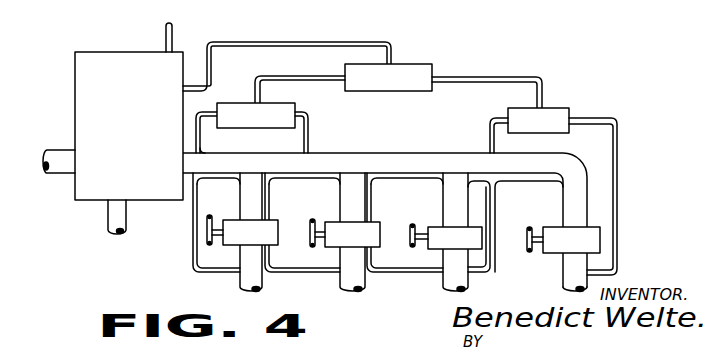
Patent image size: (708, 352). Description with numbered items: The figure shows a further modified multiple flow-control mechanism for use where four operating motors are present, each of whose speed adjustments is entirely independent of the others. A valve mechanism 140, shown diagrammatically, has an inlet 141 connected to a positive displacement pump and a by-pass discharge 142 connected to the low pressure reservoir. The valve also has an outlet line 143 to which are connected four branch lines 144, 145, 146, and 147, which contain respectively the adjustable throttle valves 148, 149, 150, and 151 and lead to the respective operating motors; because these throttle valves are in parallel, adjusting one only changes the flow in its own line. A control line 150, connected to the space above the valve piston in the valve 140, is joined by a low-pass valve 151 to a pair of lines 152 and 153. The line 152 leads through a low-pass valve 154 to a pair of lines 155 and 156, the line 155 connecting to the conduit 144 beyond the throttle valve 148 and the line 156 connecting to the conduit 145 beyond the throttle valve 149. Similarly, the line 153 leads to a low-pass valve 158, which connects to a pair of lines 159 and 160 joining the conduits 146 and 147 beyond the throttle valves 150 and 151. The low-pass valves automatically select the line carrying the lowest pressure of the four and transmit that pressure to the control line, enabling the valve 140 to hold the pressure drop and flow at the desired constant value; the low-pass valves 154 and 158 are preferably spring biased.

The valve mechanism 140 is at (82, 96).
The inlet 141 is at (64, 178).
The by-pass discharge 142 is at (110, 222).
The outlet line 143 is at (352, 162).
The branch line 144 is at (264, 283).
The branch line 145 is at (360, 278).
The branch line 146 is at (450, 260).
The branch line 147 is at (572, 272).
The adjustable throttle valve 148 is at (276, 220).
The adjustable throttle valve 149 is at (367, 227).
The control line 150 is at (248, 41).
The low-pass valve 151 is at (410, 66).
The line 152 is at (323, 62).
The line 153 is at (487, 80).
The low-pass valve 154 is at (287, 105).
The line 155 is at (203, 110).
The line 156 is at (311, 125).
The low-pass valve 158 is at (552, 113).
The line 159 is at (492, 125).
The line 160 is at (617, 148).